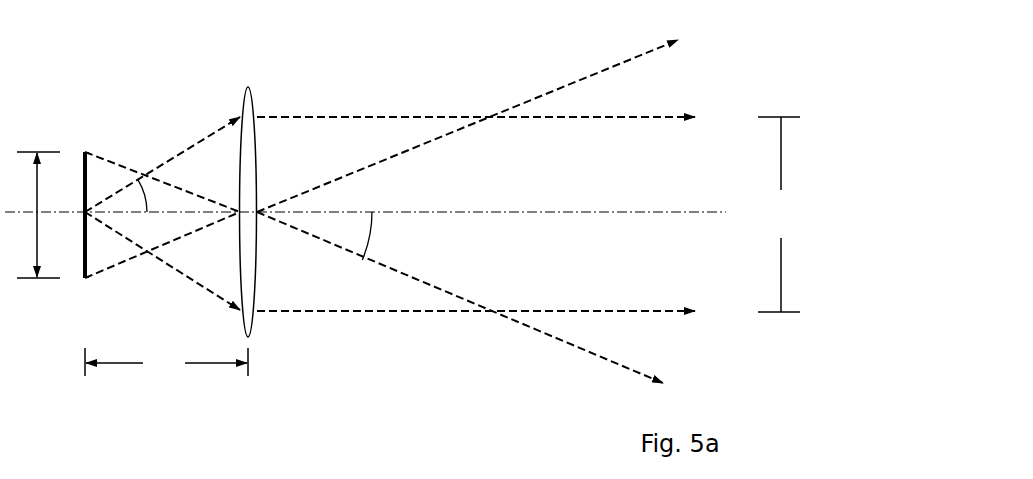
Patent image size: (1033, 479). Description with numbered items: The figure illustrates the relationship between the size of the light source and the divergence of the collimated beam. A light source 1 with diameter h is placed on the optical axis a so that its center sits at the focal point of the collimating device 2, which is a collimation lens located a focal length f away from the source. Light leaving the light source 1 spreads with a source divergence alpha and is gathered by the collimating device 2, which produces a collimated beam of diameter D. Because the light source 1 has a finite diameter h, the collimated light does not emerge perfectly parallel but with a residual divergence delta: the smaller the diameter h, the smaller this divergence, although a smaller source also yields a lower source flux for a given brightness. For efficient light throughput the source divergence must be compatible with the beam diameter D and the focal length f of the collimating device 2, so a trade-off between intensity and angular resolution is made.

The light source 1 is at (86, 176).
The collimating device 2 is at (252, 127).
The optical axis a is at (365, 198).
The diameter of the light source h is at (38, 215).
The focal length f is at (166, 362).
The diameter of the collimated beam D is at (779, 214).